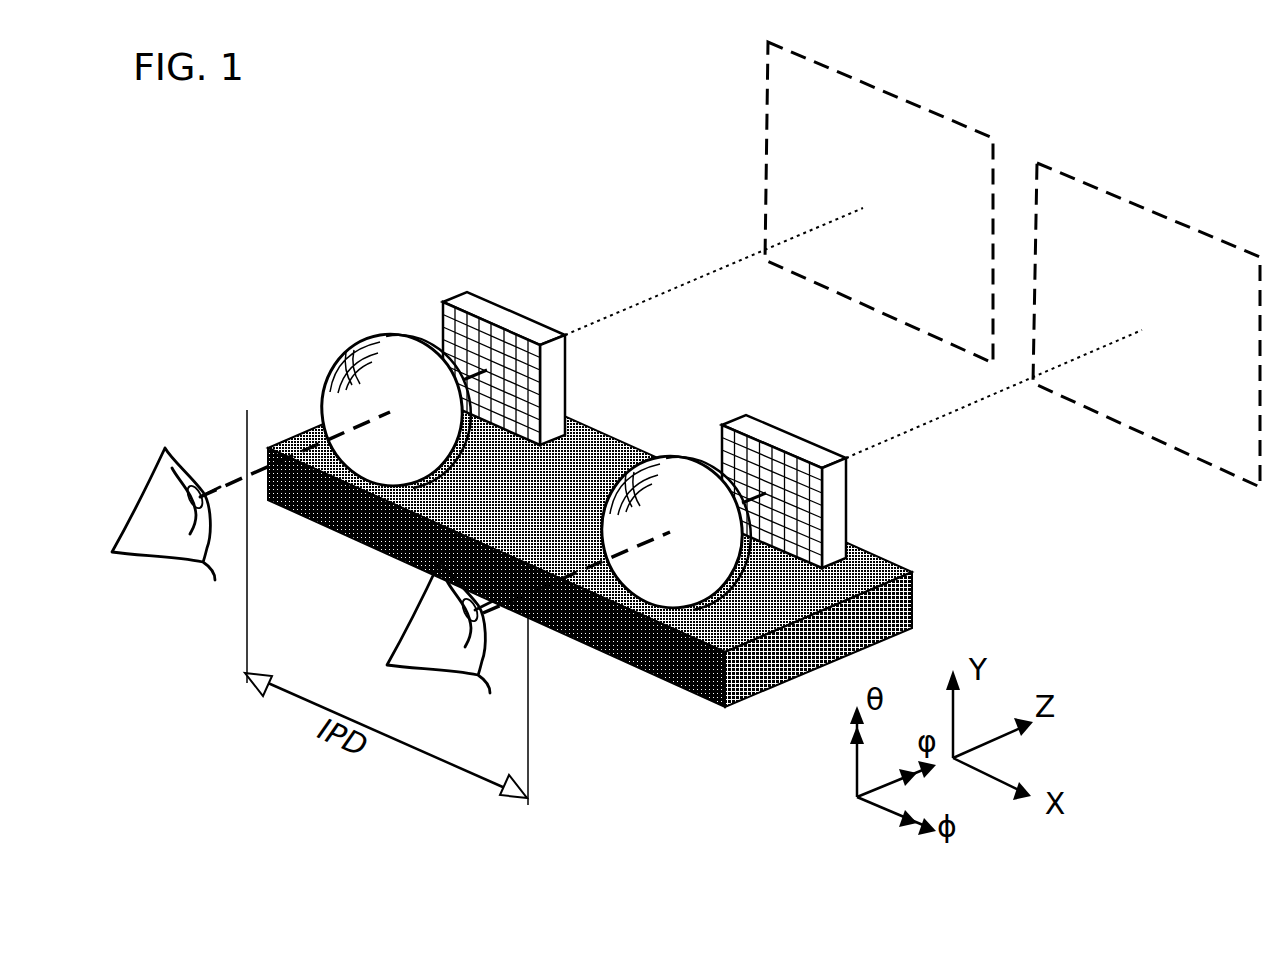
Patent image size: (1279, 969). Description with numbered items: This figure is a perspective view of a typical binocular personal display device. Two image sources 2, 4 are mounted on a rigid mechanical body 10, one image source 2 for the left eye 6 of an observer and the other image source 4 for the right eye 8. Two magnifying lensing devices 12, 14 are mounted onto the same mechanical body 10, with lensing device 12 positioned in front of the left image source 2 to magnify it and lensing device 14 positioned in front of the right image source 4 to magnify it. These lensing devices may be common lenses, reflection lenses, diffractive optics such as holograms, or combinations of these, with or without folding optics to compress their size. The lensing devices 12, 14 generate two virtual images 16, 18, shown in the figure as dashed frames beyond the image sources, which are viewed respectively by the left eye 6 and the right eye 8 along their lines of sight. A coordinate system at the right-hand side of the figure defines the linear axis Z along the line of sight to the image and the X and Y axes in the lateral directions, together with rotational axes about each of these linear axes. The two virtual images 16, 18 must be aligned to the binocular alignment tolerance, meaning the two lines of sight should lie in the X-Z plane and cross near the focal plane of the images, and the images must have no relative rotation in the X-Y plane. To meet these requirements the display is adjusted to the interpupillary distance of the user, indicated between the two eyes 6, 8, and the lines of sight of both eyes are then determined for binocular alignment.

The image source 2 is at (468, 302).
The image source 4 is at (767, 437).
The left eye 6 is at (178, 556).
The right eye 8 is at (412, 646).
The rigid mechanical body 10 is at (898, 566).
The magnifying lensing device 12 is at (393, 337).
The magnifying lensing device 14 is at (673, 473).
The virtual image 16 is at (766, 160).
The virtual image 18 is at (1226, 245).